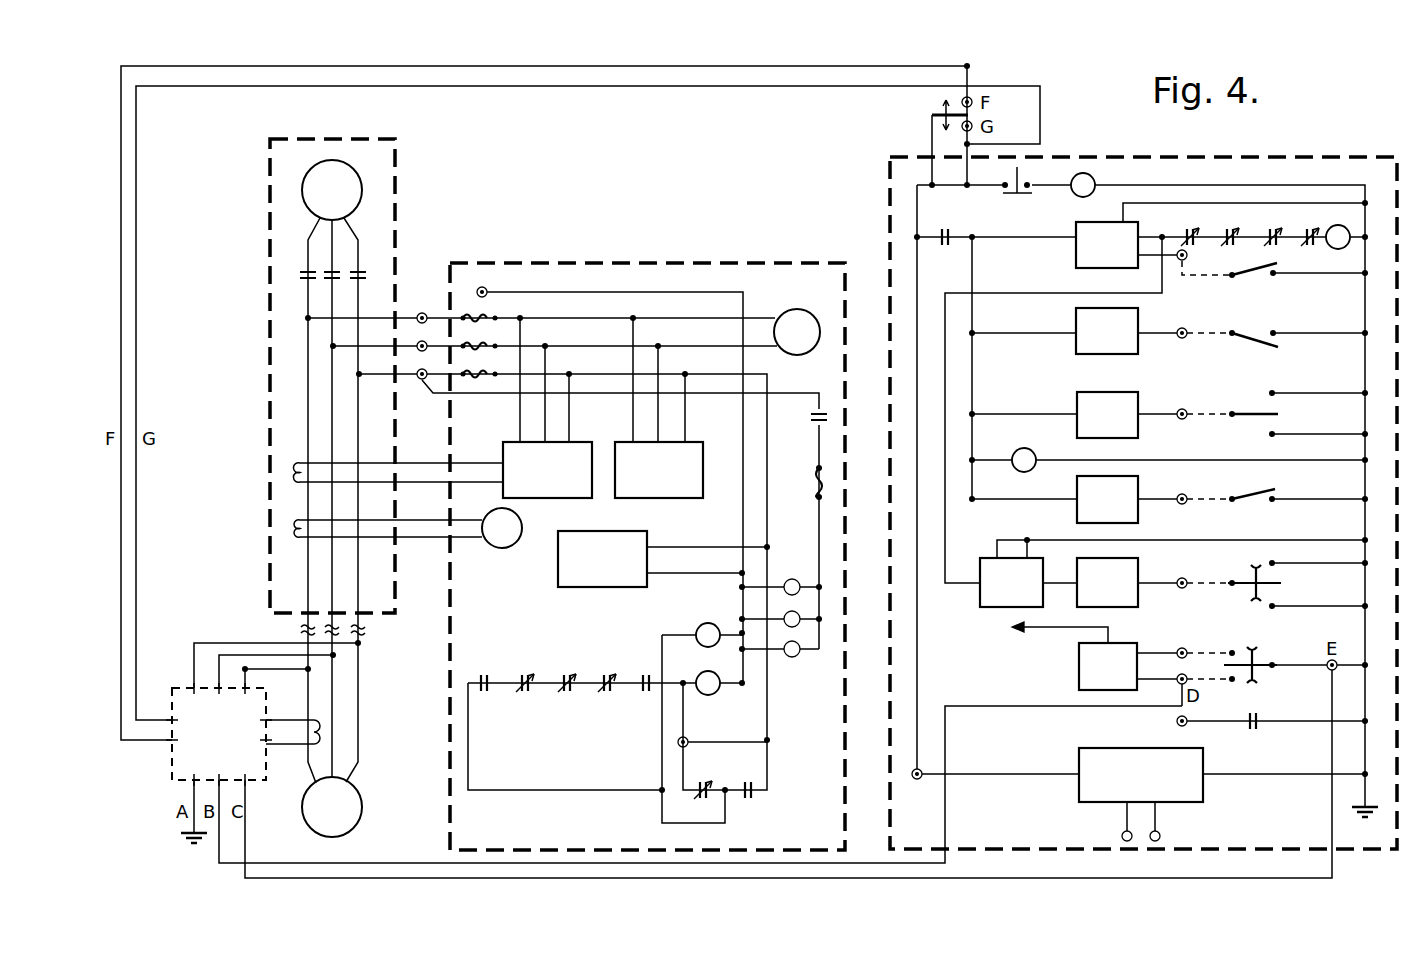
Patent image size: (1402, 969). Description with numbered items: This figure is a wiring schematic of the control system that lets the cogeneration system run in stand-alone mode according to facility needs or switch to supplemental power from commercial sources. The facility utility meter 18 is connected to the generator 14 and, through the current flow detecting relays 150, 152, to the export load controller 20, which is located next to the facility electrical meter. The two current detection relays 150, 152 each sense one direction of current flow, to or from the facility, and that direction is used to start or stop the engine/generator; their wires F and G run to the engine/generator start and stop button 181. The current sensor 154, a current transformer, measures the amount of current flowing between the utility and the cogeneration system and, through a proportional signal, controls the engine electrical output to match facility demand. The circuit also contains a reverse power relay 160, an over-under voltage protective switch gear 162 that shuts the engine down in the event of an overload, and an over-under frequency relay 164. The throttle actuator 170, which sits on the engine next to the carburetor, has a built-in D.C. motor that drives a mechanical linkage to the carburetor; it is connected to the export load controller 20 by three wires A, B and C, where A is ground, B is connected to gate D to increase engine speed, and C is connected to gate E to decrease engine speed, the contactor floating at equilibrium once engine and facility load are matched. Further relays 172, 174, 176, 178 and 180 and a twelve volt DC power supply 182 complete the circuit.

The generator 14 is at (358, 184).
The facility utility meter 18 is at (354, 812).
The export load controller 20 is at (234, 750).
The current flow detecting relay 150 is at (245, 668).
The current flow detecting relay 152 is at (268, 652).
The current sensor 154 is at (307, 762).
The reverse power relay 160 is at (570, 482).
The over-under voltage protective switch gear 162 is at (682, 482).
The over-under frequency relay 164 is at (625, 571).
The throttle actuator 170 is at (1128, 679).
The relay 172 is at (1128, 594).
The relay 174 is at (1128, 512).
The relay 176 is at (1128, 427).
The relay 178 is at (1128, 343).
The relay 180 is at (1128, 257).
The engine/generator start and stop button 181 is at (922, 107).
The 12 volt DC power supply 182 is at (1161, 787).